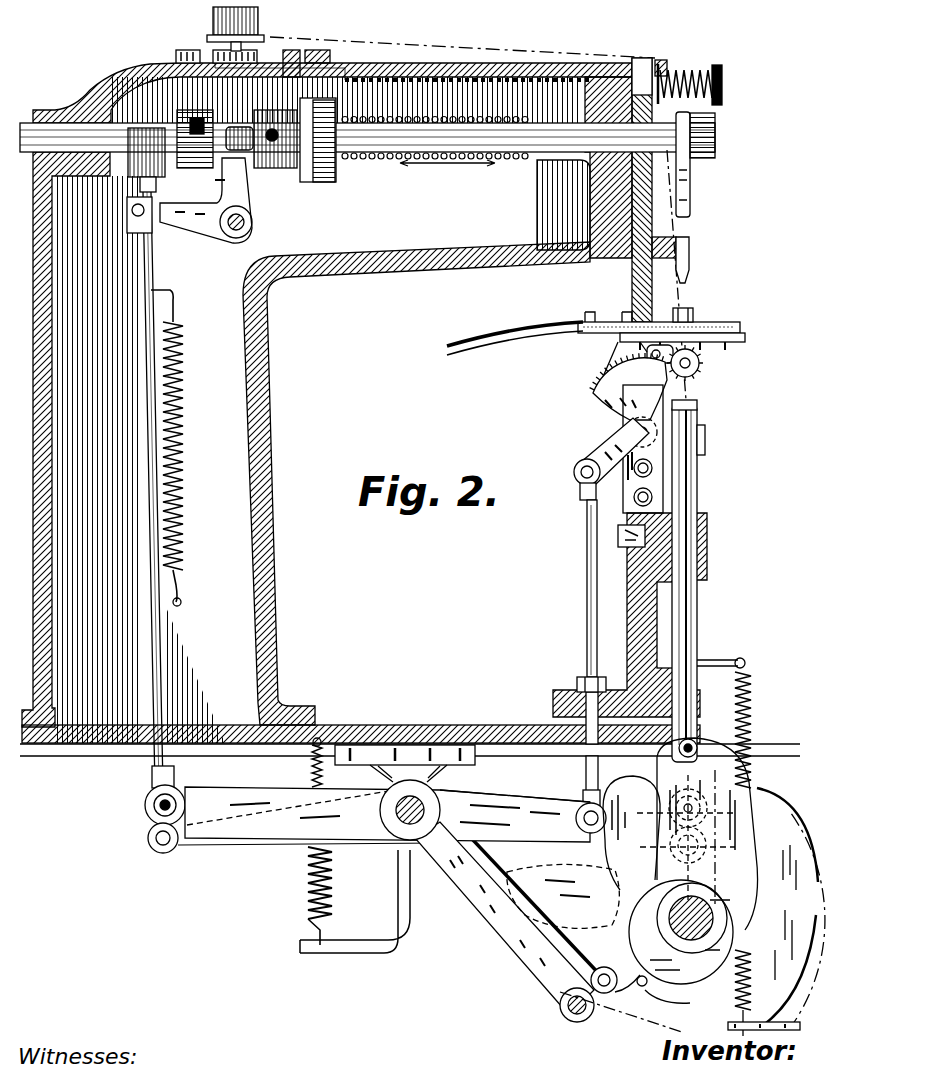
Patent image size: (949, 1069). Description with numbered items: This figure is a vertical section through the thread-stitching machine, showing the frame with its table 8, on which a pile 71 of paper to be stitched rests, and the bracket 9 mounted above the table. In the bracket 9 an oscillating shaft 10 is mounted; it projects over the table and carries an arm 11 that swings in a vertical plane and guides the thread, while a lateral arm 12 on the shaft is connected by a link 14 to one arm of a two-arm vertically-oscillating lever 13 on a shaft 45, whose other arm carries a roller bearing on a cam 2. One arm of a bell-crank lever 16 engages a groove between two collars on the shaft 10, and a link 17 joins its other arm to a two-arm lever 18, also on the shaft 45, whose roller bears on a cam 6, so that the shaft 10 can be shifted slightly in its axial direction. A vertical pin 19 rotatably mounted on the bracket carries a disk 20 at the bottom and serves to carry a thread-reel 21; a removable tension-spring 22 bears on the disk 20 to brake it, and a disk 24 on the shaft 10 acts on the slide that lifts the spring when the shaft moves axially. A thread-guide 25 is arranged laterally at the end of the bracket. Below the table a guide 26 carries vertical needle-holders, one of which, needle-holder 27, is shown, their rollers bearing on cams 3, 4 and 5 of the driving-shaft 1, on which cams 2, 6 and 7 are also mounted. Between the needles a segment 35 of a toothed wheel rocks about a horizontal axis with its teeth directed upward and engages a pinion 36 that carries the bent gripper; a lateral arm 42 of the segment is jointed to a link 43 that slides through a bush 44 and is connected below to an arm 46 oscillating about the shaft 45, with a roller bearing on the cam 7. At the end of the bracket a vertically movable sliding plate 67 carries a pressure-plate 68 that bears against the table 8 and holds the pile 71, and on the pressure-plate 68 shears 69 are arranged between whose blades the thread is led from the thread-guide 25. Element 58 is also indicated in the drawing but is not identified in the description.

The driving-shaft 1 is at (668, 916).
The cam 2 is at (621, 1000).
The cam 3 is at (743, 802).
The cam 4 is at (636, 786).
The cam 5 is at (597, 877).
The cam 6 is at (643, 983).
The cam 7 is at (791, 909).
The table 8 is at (708, 340).
The bracket 9 is at (504, 252).
The oscillating shaft 10 is at (512, 136).
The arm 11 is at (690, 188).
The lateral arm 12 is at (181, 170).
The two-arm vertically-oscillating lever 13 is at (517, 955).
The link 14 is at (153, 275).
The bell-crank lever 16 is at (240, 194).
The link 17 is at (148, 840).
The vertically-oscillating two-arm lever 18 is at (230, 845).
The vertical pin 19 is at (243, 51).
The disk 20 is at (233, 51).
The thread-reel 21 is at (258, 31).
The tension-spring 22 is at (203, 55).
The disk 24 is at (337, 162).
The thread-guide 25 is at (690, 262).
The guide 26 is at (707, 548).
The needle-holder 27 is at (699, 487).
The segment of a toothed wheel 35 is at (620, 405).
The pinion 36 is at (700, 366).
The lateral arm 42 is at (627, 443).
The link 43 is at (588, 628).
The bush 44 is at (594, 676).
The shaft 45 is at (405, 825).
The arm 46 is at (512, 808).
The pawl 58 is at (634, 367).
The sliding plate 67 is at (635, 277).
The pressure-plate 68 is at (712, 330).
The shears 69 is at (697, 316).
The pile 71 is at (508, 344).